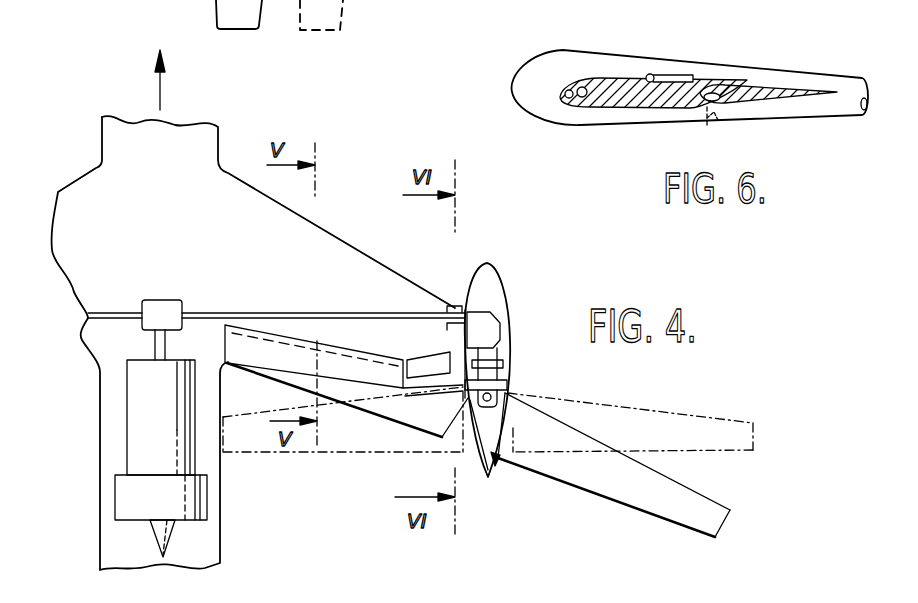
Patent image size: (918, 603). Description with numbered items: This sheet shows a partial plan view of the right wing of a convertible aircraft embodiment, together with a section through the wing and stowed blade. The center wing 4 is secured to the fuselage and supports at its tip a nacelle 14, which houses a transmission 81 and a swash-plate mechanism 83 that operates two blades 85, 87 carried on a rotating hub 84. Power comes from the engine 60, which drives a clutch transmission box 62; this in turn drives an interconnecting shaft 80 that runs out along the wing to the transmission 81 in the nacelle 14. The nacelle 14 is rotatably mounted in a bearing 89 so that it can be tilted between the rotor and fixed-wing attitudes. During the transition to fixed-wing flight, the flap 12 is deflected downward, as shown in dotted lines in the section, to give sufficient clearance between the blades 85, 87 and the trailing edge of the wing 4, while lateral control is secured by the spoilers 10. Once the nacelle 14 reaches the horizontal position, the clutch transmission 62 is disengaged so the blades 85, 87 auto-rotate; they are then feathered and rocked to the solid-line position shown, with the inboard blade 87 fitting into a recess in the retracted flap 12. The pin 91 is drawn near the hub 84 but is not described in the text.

In FIG. 4, the center wing 4 is at (230, 183).
In FIG. 6, the center wing 4 is at (652, 98).
In FIG. 4, the spoilers 10 is at (435, 361).
In FIG. 6, the spoilers 10 is at (665, 75).
In FIG. 4, the flap 12 is at (447, 390).
In FIG. 6, the flap 12 is at (725, 96).
In FIG. 4, the nacelle 14 is at (487, 280).
In FIG. 6, the nacelle 14 is at (845, 80).
In FIG. 4, the engine 60 is at (135, 423).
In FIG. 4, the clutch transmission box 62 is at (163, 300).
In FIG. 4, the interconnecting shaft 80 is at (326, 312).
In FIG. 6, the interconnecting shaft 80 is at (565, 92).
In FIG. 4, the transmission 81 is at (490, 330).
In FIG. 4, the swash-plate mechanism 83 is at (503, 365).
In FIG. 4, the rotating hub 84 is at (500, 390).
In FIG. 4, the blade 85 is at (707, 503).
In FIG. 4, the inboard blade 87 is at (392, 403).
In FIG. 6, the inboard blade 87 is at (790, 90).
In FIG. 4, the bearing 89 is at (455, 305).
In FIG. 4, the pivot pin 91 is at (492, 462).